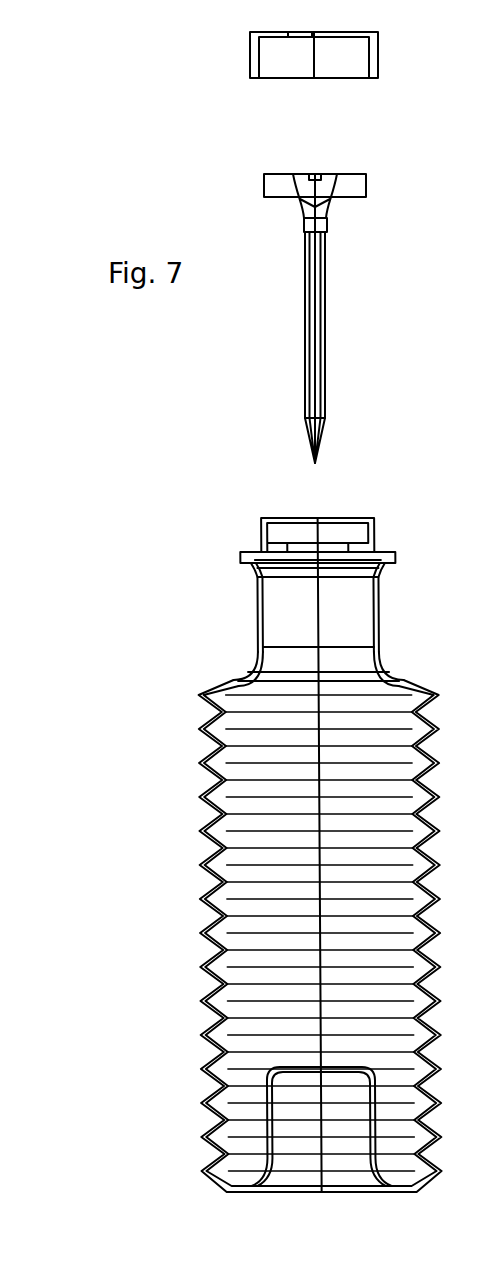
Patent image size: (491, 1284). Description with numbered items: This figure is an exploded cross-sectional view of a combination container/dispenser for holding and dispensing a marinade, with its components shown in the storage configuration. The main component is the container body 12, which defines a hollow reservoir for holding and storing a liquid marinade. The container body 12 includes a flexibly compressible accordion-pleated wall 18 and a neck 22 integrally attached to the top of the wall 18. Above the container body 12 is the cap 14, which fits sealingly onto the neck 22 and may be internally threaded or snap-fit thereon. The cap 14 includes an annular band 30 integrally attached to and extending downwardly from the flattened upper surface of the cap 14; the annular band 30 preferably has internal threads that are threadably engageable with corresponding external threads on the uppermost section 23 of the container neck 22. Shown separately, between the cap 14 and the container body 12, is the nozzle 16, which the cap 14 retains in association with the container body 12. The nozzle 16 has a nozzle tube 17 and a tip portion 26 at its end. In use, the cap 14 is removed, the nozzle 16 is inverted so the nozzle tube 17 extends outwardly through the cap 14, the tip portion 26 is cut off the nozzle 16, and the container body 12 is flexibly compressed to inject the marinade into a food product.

The container body 12 is at (243, 843).
The cap 14 is at (282, 90).
The nozzle 16 is at (273, 323).
The nozzle tube 17 is at (329, 324).
The accordion-pleated wall 18 is at (320, 936).
The neck 22 is at (318, 619).
The uppermost section of the container neck 23 is at (317, 535).
The tip portion 26 is at (327, 431).
The annular band 30 is at (378, 56).